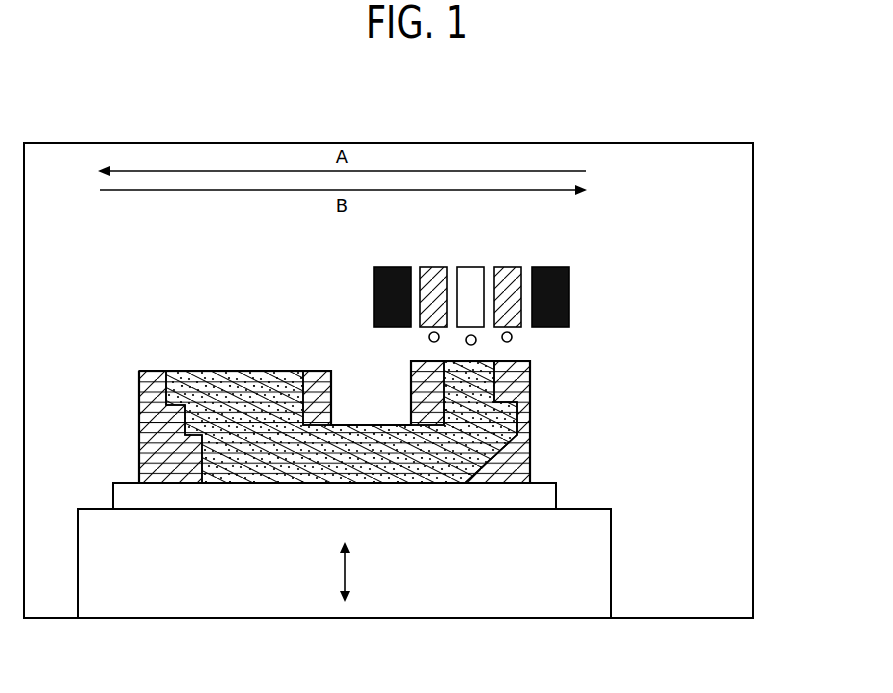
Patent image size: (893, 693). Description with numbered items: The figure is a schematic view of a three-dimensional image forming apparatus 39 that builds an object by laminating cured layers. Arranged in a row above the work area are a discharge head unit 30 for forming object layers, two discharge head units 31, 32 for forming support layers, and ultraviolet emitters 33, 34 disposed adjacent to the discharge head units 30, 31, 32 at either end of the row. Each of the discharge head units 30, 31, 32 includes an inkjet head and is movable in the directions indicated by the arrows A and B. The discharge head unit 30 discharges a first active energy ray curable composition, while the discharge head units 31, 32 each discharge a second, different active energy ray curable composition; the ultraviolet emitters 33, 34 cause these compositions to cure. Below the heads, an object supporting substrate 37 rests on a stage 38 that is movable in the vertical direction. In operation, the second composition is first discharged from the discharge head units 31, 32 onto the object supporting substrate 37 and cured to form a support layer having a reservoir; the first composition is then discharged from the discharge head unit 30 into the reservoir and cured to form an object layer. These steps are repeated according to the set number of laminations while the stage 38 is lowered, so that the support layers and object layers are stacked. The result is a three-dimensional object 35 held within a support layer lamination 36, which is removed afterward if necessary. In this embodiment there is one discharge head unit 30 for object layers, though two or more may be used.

The discharge head unit 30 is at (469, 266).
The discharge head unit 31 is at (432, 266).
The discharge head unit 32 is at (504, 266).
The ultraviolet emitter 33 is at (393, 266).
The ultraviolet emitter 34 is at (548, 266).
The three-dimensional object 35 is at (264, 345).
The support layer lamination 36 is at (544, 391).
The object supporting substrate 37 is at (557, 496).
The stage 38 is at (612, 553).
The image forming apparatus 39 is at (766, 483).